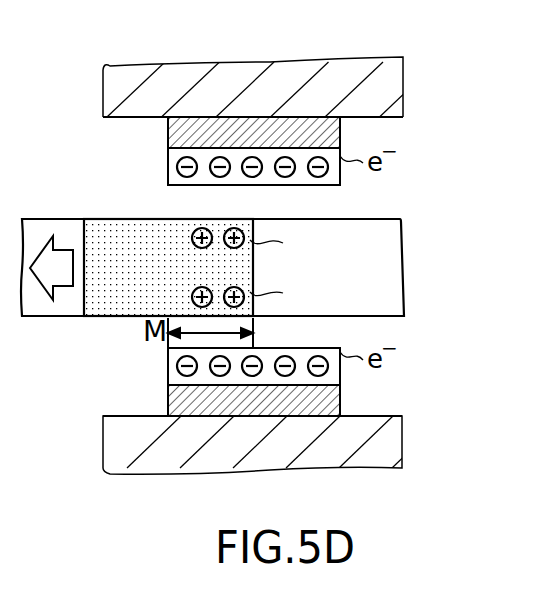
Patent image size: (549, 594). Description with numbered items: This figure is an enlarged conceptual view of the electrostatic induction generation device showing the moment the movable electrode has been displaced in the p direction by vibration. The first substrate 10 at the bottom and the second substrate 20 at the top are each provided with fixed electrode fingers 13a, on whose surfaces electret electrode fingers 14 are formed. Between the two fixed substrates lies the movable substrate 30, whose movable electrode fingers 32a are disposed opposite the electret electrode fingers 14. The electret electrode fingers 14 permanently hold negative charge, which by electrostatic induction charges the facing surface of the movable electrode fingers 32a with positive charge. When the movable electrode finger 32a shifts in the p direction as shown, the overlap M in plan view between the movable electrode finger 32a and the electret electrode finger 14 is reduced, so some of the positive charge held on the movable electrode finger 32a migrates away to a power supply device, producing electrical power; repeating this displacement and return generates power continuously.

The first substrate 10 is at (395, 447).
The second substrate 20 is at (395, 86).
The fixed electrode fingers 13a is at (168, 137).
The electret electrode fingers 14 is at (168, 178).
The movable substrate 30 is at (382, 218).
The movable electrode fingers 32a is at (118, 317).